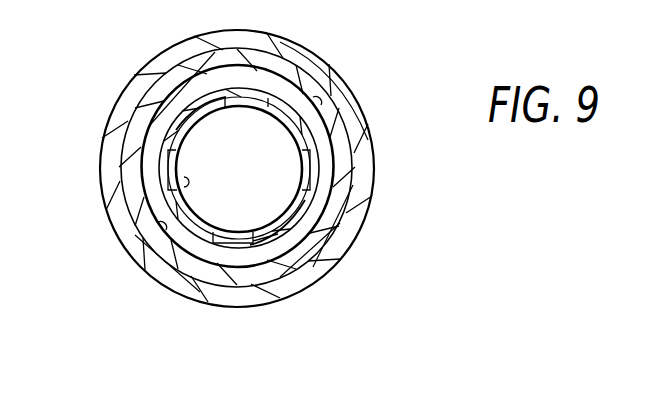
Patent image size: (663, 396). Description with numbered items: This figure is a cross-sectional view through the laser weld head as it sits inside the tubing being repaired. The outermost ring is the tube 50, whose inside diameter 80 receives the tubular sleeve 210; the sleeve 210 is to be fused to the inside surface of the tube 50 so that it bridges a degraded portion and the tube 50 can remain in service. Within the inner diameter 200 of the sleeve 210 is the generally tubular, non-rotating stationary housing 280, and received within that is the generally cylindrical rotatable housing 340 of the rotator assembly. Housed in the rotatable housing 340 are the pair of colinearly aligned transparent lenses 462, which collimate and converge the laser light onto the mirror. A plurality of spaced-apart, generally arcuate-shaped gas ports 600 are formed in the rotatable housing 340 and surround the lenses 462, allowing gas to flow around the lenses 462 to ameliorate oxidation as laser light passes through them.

The tube 50 is at (330, 258).
The rotatable housing 340 is at (297, 282).
The tubular sleeve 210 is at (234, 282).
The transparent lenses 462 is at (205, 128).
The gas ports 600 is at (186, 180).
The stationary housing 280 is at (300, 176).
The inner diameter 200 is at (162, 226).
The inside diameter 80 is at (318, 98).